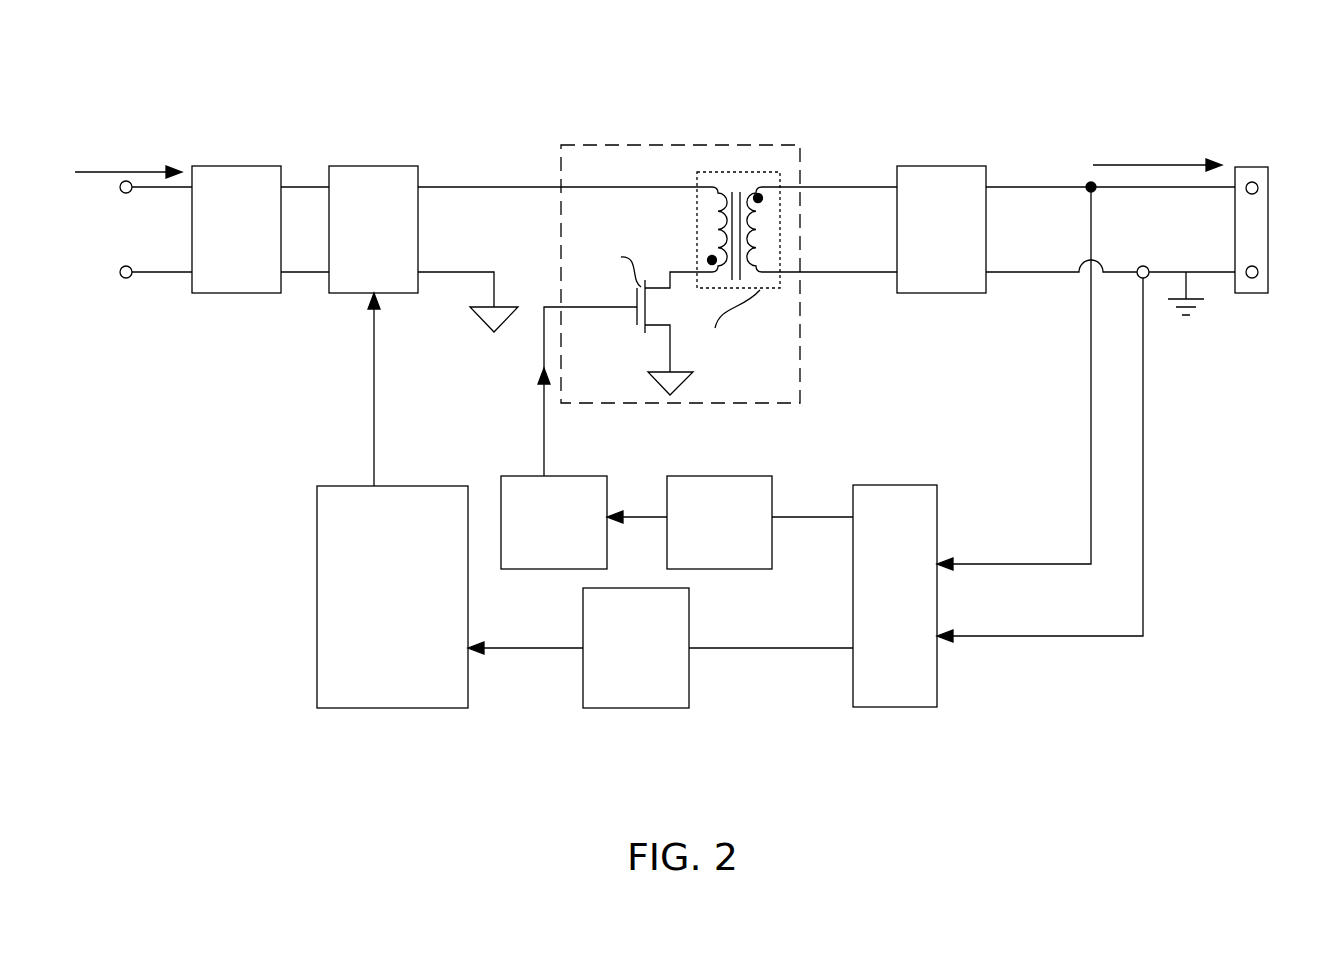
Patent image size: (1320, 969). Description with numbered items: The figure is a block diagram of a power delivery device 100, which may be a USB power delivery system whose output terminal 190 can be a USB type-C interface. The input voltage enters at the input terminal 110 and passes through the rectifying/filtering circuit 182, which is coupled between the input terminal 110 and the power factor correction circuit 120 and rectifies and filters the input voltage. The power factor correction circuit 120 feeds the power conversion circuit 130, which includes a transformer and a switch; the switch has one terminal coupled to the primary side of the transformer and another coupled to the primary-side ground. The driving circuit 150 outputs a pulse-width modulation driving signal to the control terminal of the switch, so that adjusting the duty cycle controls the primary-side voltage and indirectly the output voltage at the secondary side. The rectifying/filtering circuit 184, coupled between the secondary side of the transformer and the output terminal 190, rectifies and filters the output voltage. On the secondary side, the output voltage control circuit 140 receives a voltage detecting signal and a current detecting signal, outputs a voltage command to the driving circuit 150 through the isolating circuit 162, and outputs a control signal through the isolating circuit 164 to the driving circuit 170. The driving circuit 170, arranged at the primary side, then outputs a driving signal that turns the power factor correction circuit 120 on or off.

The power delivery device 100 is at (112, 49).
The input terminal 110 is at (126, 194).
The power factor correction circuit 120 is at (393, 242).
The power conversion circuit 130 is at (577, 145).
The output voltage control circuit 140 is at (914, 608).
The driving circuit 150 is at (573, 534).
The isolating circuit 162 is at (738, 534).
The isolating circuit 164 is at (655, 660).
The driving circuit 170 is at (411, 609).
The rectifying/filtering circuit 182 is at (256, 242).
The rectifying/filtering circuit 184 is at (960, 242).
The output terminal 190 is at (1247, 167).